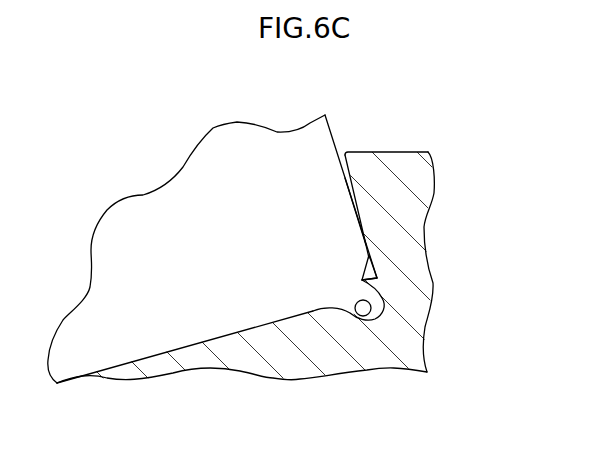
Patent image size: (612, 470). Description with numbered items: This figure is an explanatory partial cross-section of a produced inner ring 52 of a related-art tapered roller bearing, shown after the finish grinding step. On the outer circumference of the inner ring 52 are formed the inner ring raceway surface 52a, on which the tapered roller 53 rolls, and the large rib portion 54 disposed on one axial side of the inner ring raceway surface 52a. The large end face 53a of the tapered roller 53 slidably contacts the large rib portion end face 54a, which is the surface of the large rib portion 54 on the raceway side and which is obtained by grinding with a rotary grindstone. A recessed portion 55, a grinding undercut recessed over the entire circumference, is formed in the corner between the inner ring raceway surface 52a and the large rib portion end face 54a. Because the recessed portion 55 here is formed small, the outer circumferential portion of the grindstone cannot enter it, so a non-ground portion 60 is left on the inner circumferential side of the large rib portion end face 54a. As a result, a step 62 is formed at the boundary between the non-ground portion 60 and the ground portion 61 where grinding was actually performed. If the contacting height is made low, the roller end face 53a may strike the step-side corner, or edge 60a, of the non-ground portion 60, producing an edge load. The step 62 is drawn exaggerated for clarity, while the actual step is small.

The inner ring 52 is at (452, 215).
The inner ring raceway surface 52a is at (152, 355).
The tapered roller 53 is at (211, 125).
The large end face 53a is at (336, 130).
The large rib portion 54 is at (419, 131).
The large rib portion end face 54a is at (333, 208).
The recessed portion 55 is at (360, 317).
The non-ground portion 60 is at (361, 281).
The edge 60a is at (363, 280).
The ground portion 61 is at (347, 180).
The step 62 is at (360, 277).